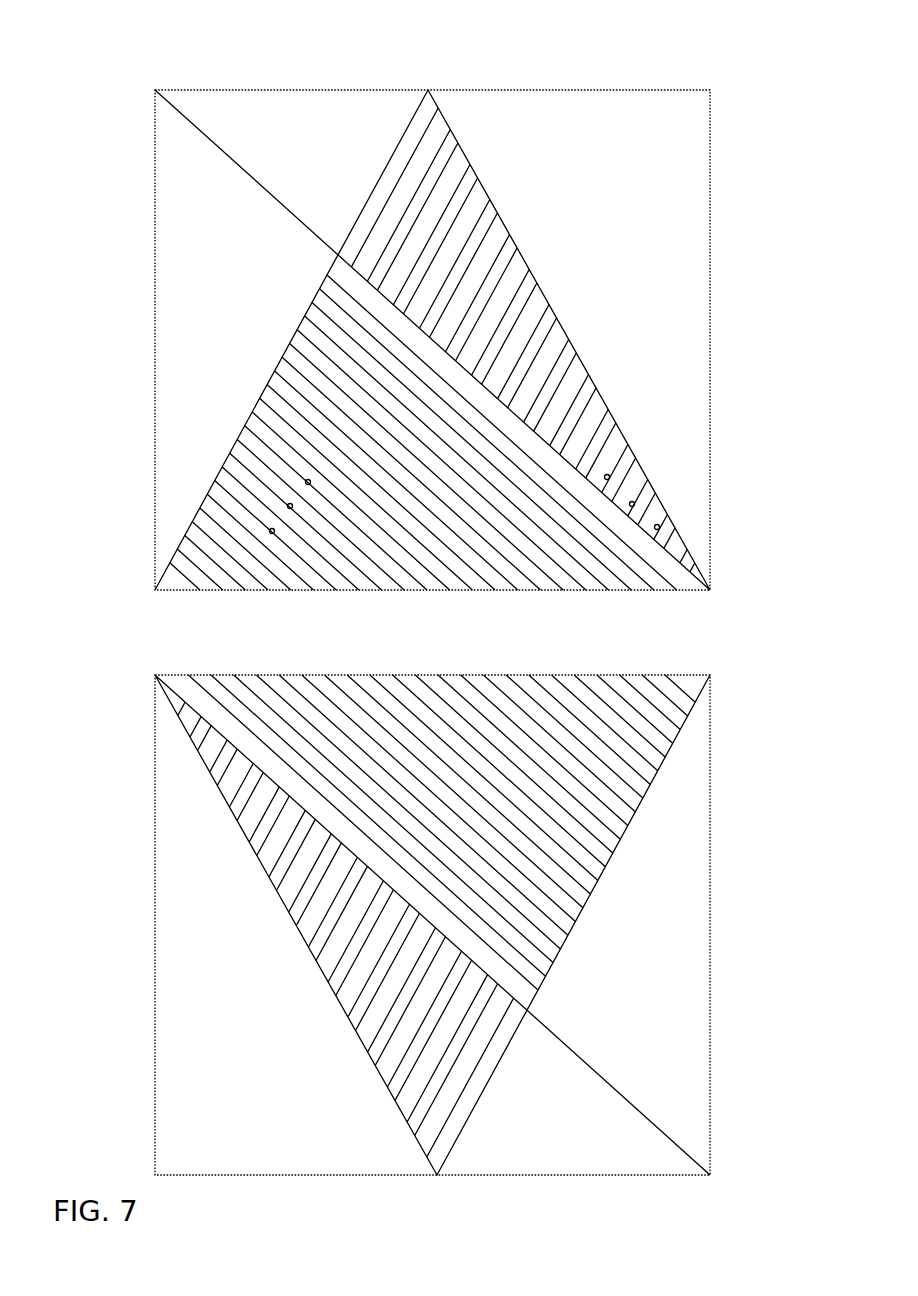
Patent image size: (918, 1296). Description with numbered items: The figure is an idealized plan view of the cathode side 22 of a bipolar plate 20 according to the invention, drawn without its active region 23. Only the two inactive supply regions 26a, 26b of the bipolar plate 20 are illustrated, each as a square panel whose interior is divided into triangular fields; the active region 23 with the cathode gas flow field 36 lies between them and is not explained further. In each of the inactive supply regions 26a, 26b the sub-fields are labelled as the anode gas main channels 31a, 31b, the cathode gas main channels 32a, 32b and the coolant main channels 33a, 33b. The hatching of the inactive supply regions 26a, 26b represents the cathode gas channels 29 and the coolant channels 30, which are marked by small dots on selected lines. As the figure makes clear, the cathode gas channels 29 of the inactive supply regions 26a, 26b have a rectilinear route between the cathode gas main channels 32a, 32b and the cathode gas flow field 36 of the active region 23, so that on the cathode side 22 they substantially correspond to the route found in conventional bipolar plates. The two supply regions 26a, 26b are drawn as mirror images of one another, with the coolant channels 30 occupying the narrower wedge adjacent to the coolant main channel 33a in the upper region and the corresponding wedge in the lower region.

The bipolar plate 20 is at (712, 79).
The cathode side 22 is at (678, 189).
The active region 23 is at (688, 622).
The inactive supply region 26a is at (648, 452).
The inactive supply region 26b is at (678, 739).
The cathode gas channel 29 is at (269, 531).
The coolant channel 30 is at (660, 527).
The anode gas main channel 31a is at (322, 143).
The cathode gas main channel 32a is at (227, 290).
The coolant main channel 33a is at (612, 257).
The anode gas main channel 31b is at (541, 1123).
The cathode gas main channel 32b is at (617, 1002).
The coolant main channel 33b is at (247, 1015).
The cathode gas flow field 36 is at (432, 634).